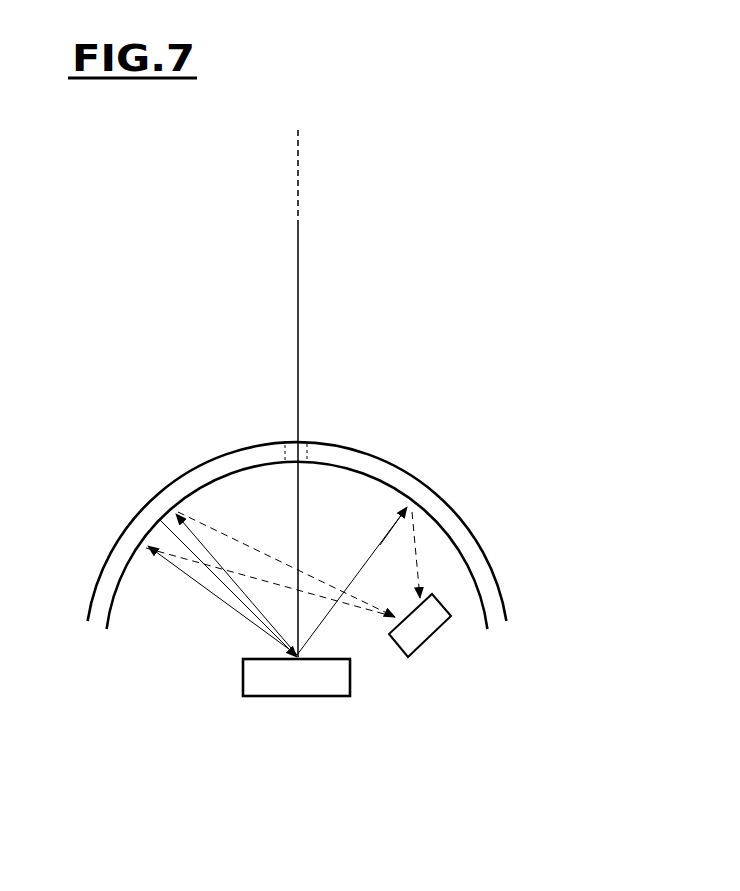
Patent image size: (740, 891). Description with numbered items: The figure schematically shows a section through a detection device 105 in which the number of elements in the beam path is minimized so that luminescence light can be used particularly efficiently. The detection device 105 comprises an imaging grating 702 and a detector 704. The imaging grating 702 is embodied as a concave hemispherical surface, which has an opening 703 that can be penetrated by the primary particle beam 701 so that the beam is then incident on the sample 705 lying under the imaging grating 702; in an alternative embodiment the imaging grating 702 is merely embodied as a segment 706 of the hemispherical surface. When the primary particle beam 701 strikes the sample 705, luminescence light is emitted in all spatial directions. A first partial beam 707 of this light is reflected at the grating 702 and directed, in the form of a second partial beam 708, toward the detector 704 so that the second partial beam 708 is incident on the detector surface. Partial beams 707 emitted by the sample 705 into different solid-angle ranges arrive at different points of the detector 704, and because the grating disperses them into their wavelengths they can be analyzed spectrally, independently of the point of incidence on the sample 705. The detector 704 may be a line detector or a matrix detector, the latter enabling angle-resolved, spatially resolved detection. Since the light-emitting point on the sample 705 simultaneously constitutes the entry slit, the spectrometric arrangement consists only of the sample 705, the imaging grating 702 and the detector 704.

The detection device 105 is at (548, 293).
The primary particle beam 701 is at (300, 244).
The imaging grating 702 is at (410, 506).
The opening 703 is at (283, 443).
The detector 704 is at (418, 630).
The sample 705 is at (287, 685).
The segment of the hemispherical surface 706 is at (133, 555).
The first partial beam 707 is at (381, 543).
The second partial beam 708 is at (415, 548).